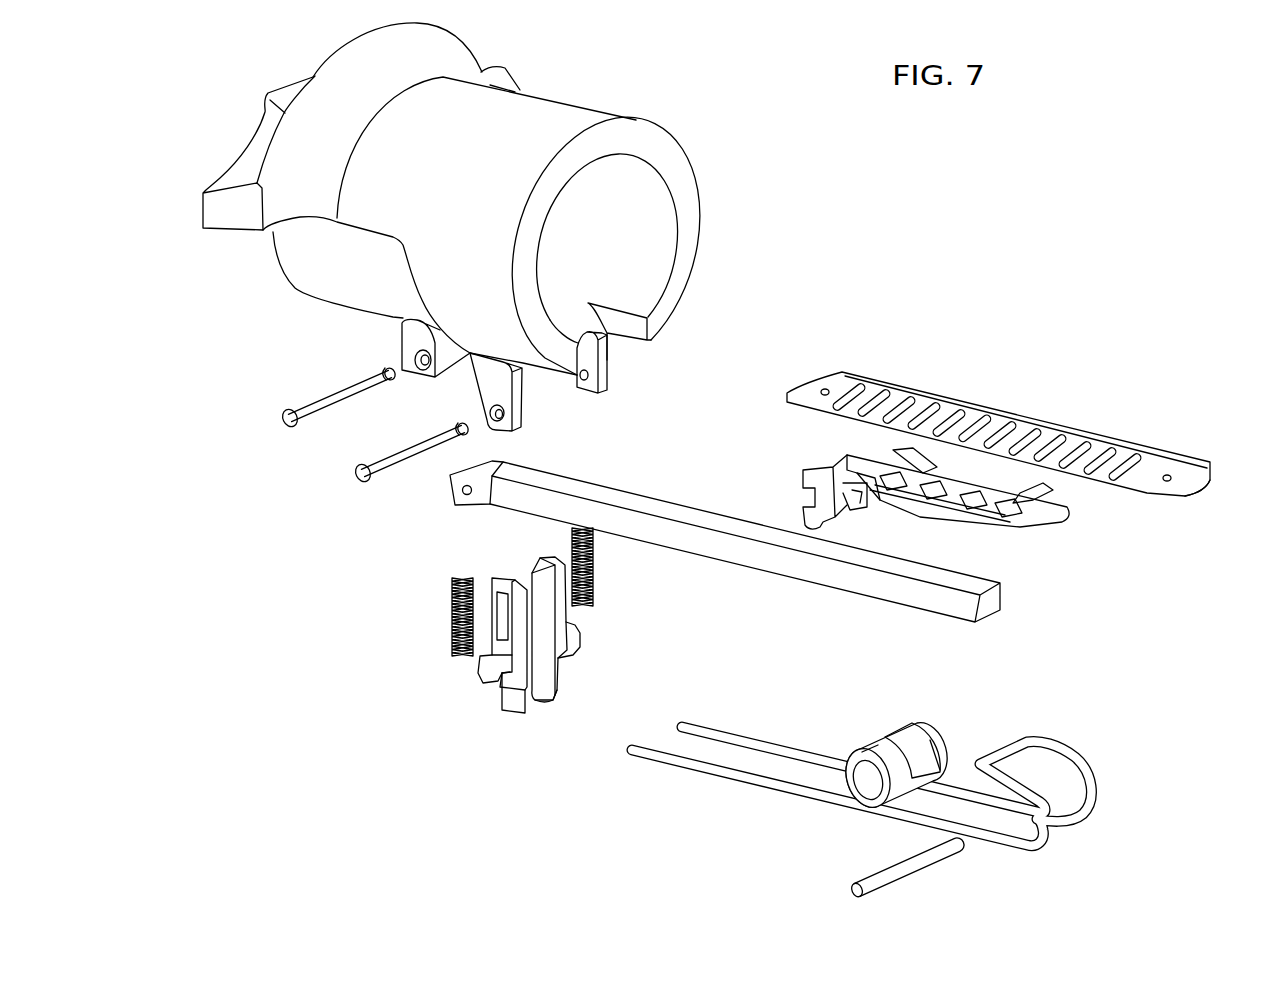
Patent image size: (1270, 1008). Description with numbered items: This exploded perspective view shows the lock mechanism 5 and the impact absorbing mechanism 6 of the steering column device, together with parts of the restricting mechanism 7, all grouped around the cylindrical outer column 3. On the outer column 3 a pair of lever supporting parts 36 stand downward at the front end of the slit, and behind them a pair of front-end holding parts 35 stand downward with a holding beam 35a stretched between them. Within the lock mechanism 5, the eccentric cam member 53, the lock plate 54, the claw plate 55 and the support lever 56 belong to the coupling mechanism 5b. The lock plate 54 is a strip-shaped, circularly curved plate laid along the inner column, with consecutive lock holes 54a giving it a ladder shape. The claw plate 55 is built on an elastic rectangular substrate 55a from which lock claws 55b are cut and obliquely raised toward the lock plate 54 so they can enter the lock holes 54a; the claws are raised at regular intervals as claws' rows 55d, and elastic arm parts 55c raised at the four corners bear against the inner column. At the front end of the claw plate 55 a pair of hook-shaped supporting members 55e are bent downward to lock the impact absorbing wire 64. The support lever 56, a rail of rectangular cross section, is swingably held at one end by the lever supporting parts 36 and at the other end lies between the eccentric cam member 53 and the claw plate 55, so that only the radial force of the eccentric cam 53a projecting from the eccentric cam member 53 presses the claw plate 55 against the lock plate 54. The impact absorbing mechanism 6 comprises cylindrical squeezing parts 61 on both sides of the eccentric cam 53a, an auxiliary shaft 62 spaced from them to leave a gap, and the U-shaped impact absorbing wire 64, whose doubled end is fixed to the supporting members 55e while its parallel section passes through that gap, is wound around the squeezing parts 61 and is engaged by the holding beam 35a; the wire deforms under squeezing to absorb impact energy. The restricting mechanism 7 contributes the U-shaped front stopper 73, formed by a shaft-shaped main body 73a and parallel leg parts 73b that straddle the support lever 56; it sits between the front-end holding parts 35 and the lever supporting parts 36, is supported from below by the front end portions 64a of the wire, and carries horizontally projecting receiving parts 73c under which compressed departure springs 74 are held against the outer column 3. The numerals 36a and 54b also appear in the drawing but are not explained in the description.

The outer column 3 is at (552, 96).
The front-end holding parts 35 is at (518, 408).
The holding beam 35a is at (390, 453).
The lever supporting parts 36 is at (403, 347).
The pin 36a is at (330, 397).
The lock mechanism 5 is at (850, 529).
The coupling mechanism 5b is at (848, 494).
The lock plate 54 is at (1016, 454).
The lock holes 54a is at (1162, 463).
The slots 54b is at (1100, 447).
The claw plate 55 is at (947, 465).
The substrate 55a is at (847, 467).
The lock claws 55b is at (1033, 507).
The elastic arm parts 55c is at (893, 450).
The claws' row 55d is at (963, 476).
The supporting members 55e is at (817, 523).
The support lever 56 is at (1000, 598).
The restricting mechanism 7 is at (523, 667).
The front stopper 73 is at (537, 676).
The main body 73a is at (540, 705).
The leg parts 73b is at (506, 604).
The receiving parts 73c is at (580, 623).
The departure springs 74 is at (452, 618).
The impact absorbing mechanism 6 is at (849, 796).
The eccentric cam member 53 is at (914, 770).
The eccentric cam 53a is at (913, 730).
The squeezing parts 61 is at (887, 758).
The auxiliary shaft 62 is at (905, 872).
The impact absorbing wire 64 is at (849, 817).
The front end portions 64a is at (693, 730).